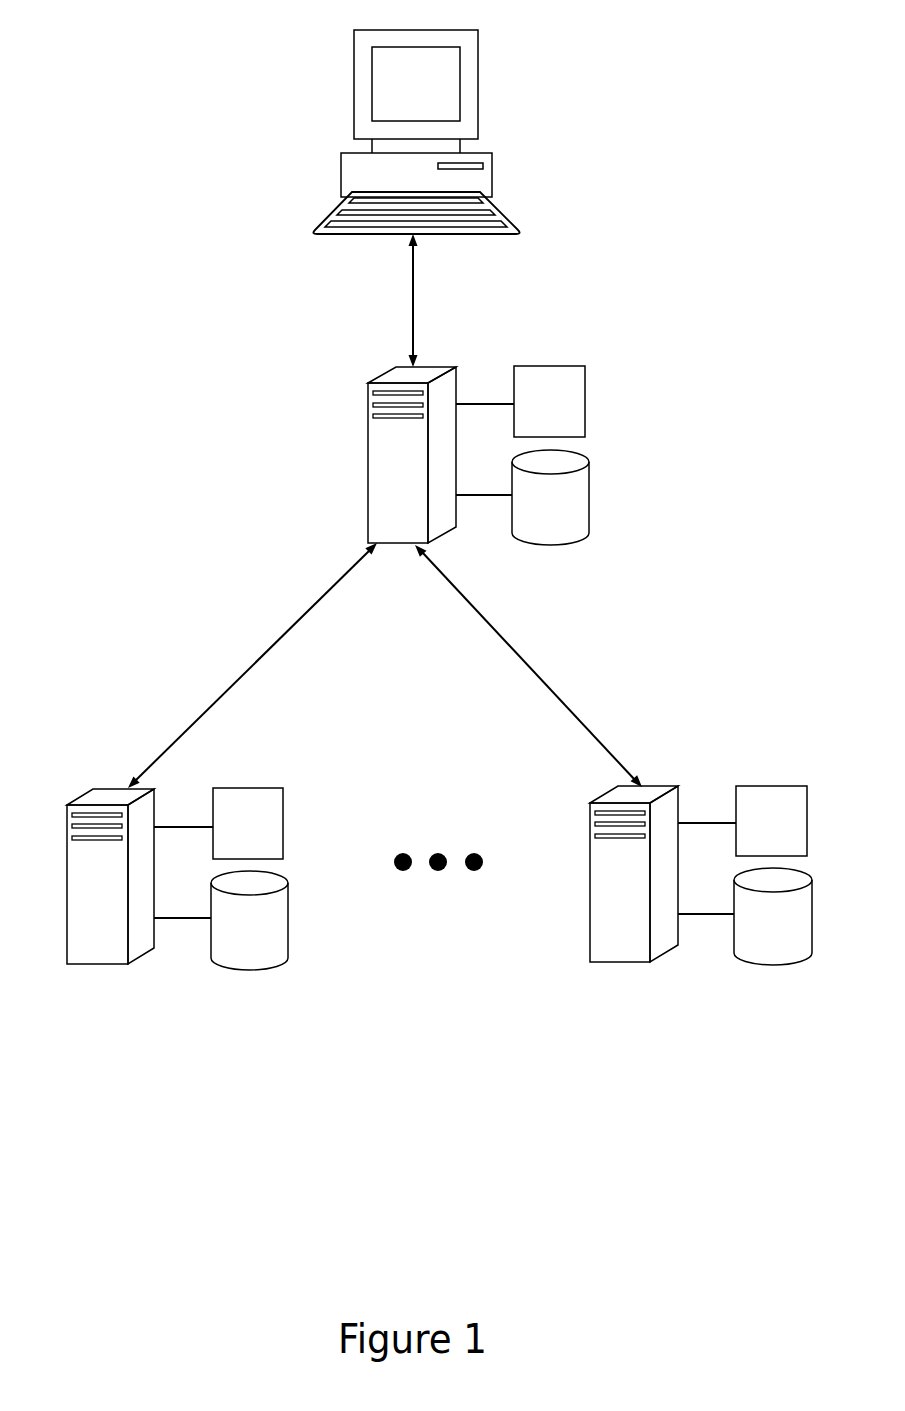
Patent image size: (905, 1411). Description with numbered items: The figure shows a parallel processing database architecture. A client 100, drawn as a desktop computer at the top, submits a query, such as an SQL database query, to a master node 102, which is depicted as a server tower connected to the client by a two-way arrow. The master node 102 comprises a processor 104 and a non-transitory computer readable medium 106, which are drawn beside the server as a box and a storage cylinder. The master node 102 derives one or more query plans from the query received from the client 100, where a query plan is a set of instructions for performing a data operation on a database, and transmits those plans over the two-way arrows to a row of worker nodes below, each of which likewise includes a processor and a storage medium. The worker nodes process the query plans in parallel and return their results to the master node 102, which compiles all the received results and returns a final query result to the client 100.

The client 100 is at (416, 132).
The master node 102 is at (412, 455).
The processor 104 is at (520, 401).
The non-transitory computer readable medium 106 is at (522, 497).